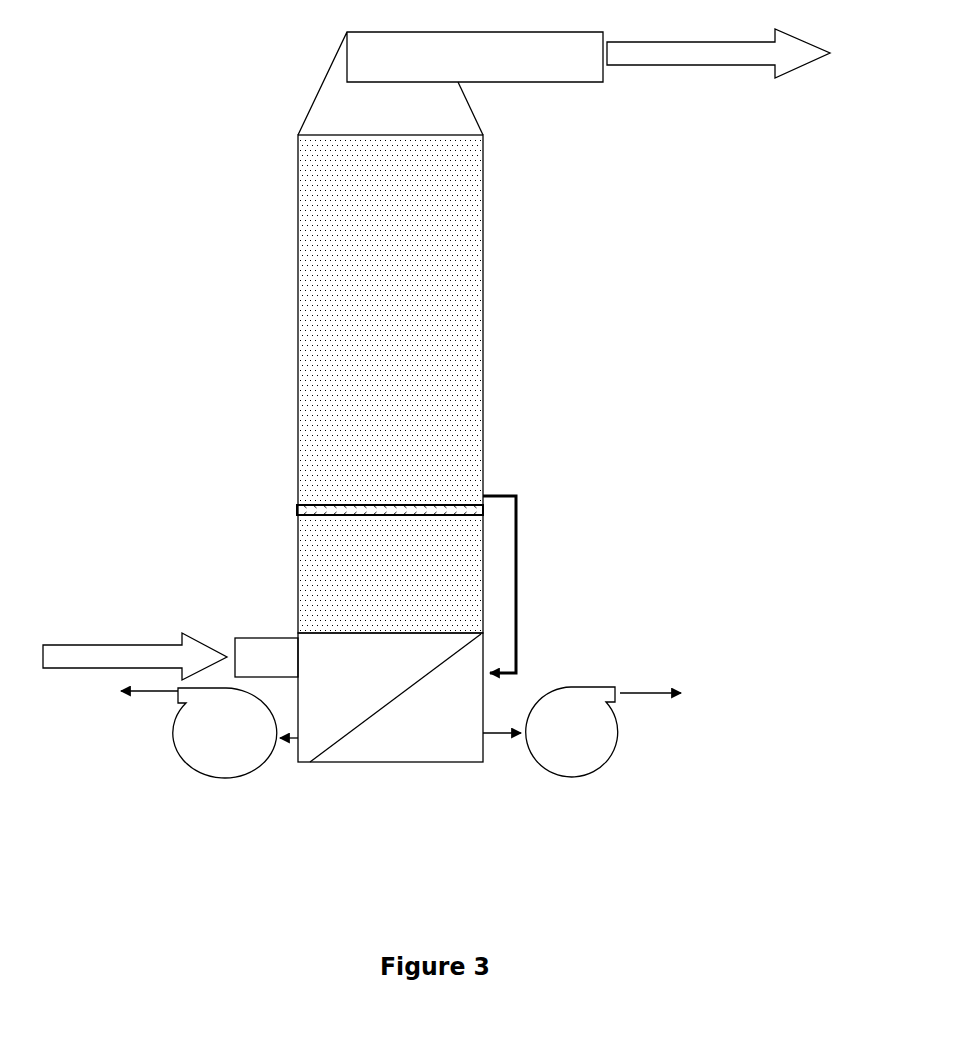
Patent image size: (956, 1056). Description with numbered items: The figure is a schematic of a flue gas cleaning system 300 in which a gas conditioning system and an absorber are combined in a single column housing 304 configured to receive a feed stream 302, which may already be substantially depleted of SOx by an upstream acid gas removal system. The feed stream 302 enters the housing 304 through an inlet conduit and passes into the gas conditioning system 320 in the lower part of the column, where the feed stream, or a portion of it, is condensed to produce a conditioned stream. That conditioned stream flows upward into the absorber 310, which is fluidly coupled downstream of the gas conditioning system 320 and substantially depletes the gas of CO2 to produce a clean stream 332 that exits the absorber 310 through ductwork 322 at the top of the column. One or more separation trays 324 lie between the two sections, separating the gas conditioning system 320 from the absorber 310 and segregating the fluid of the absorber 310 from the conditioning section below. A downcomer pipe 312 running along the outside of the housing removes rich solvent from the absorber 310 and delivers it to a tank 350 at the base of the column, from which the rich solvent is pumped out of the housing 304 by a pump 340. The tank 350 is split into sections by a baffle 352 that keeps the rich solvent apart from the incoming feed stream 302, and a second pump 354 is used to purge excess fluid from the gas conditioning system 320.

The flue gas cleaning system 300 is at (657, 295).
The feed stream 302 is at (169, 646).
The column housing 304 is at (298, 317).
The absorber 310 is at (390, 320).
The downcomer pipe 312 is at (570, 537).
The gas conditioning system 320 is at (390, 574).
The ductwork 322 is at (450, 83).
The separation tray 324 is at (316, 485).
The clean stream 332 is at (718, 71).
The pump 340 is at (582, 732).
The tank 350 is at (365, 762).
The baffle 352 is at (413, 727).
The pump 354 is at (209, 733).